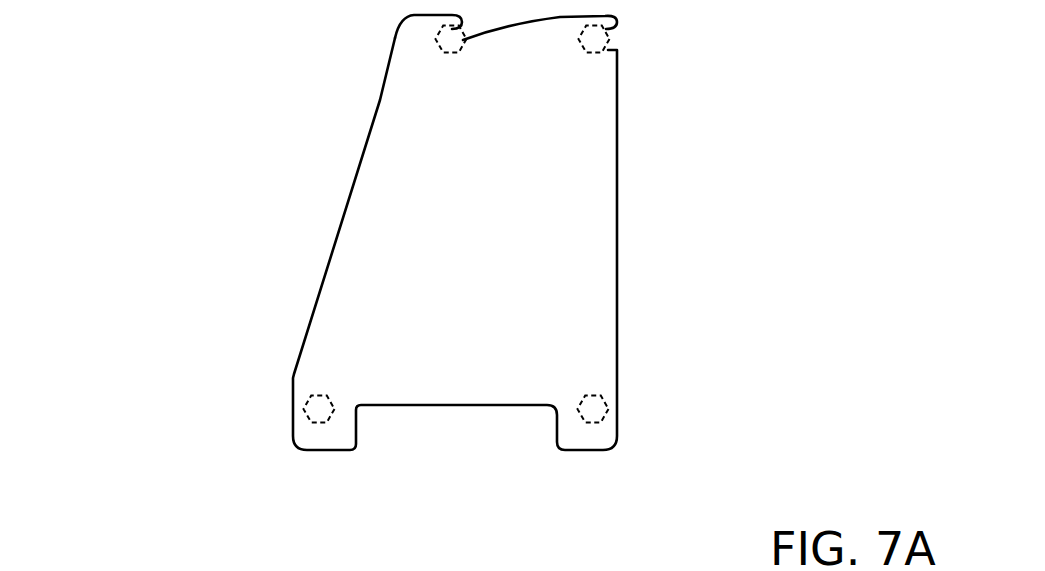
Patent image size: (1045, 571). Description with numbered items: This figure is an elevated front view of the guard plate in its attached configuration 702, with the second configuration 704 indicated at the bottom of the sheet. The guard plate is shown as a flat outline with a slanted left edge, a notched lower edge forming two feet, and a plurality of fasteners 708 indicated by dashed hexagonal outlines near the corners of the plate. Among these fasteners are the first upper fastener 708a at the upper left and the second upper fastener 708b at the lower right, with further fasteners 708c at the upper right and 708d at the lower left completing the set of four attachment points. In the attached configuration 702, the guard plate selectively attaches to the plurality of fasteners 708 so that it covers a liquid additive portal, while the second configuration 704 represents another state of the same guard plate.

The attached configuration 702 is at (146, 56).
The second configuration 704 is at (153, 570).
The plurality of fasteners 708 is at (450, 258).
The first upper fastener 708a is at (437, 43).
The second upper fastener 708b is at (605, 411).
The mounting hole 708c is at (609, 37).
The mounting hole 708d is at (320, 411).